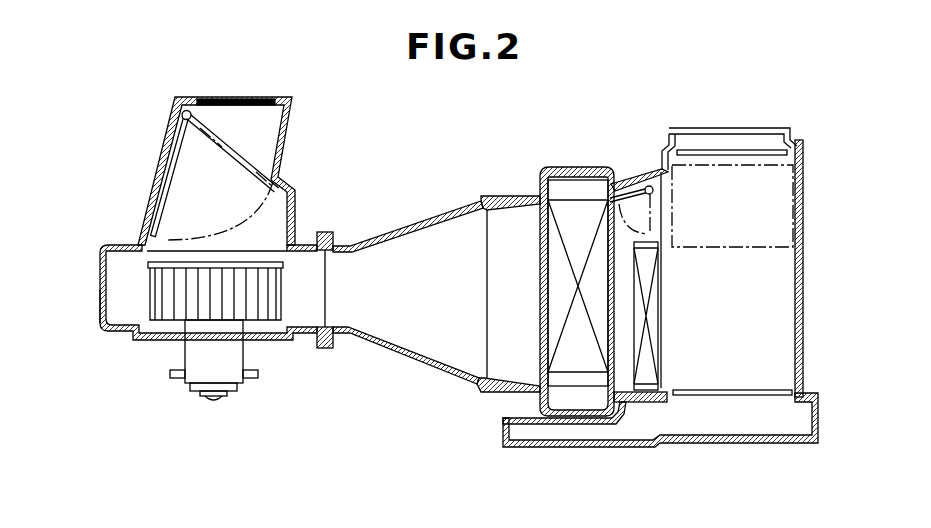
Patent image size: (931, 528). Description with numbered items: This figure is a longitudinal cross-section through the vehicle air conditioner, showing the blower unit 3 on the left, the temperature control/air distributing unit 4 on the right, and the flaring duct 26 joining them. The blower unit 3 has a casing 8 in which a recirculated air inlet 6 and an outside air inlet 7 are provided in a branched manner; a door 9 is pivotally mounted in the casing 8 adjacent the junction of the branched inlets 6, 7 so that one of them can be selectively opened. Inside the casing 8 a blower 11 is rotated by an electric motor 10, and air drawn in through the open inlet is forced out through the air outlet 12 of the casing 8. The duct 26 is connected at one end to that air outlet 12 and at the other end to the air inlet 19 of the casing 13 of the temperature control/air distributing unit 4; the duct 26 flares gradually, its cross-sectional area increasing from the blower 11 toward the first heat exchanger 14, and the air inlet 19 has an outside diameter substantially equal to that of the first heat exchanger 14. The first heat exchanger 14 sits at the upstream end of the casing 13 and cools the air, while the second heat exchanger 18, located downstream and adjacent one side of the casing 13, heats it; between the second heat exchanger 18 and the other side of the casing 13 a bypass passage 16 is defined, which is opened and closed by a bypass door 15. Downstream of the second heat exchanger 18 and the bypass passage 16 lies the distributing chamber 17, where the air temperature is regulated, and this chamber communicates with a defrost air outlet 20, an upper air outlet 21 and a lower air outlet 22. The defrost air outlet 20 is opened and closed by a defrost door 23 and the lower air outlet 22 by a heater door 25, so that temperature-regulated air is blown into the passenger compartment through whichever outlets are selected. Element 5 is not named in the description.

The blower unit 3 is at (115, 243).
The temperature control/air distributing unit 4 is at (565, 162).
The connecting duct upper wall 5 is at (402, 255).
The recirculated air inlet 6 is at (160, 173).
The outside air inlet 7 is at (247, 101).
The casing 8 is at (97, 300).
The door 9 is at (178, 152).
The electric motor 10 is at (235, 373).
The blower 11 is at (168, 312).
The air outlet 12 is at (308, 308).
The casing 13 is at (537, 407).
The first heat exchanger 14 is at (582, 373).
The bypass door 15 is at (627, 177).
The bypass passage 16 is at (640, 208).
The distributing chamber 17 is at (767, 332).
The second heat exchanger 18 is at (650, 377).
The air inlet 19 is at (509, 227).
The defrost air outlet 20 is at (757, 140).
The upper air outlet 21 is at (789, 222).
The lower air outlet 22 is at (530, 433).
The defrost door 23 is at (707, 150).
The heater door 25 is at (725, 395).
The duct 26 is at (402, 345).